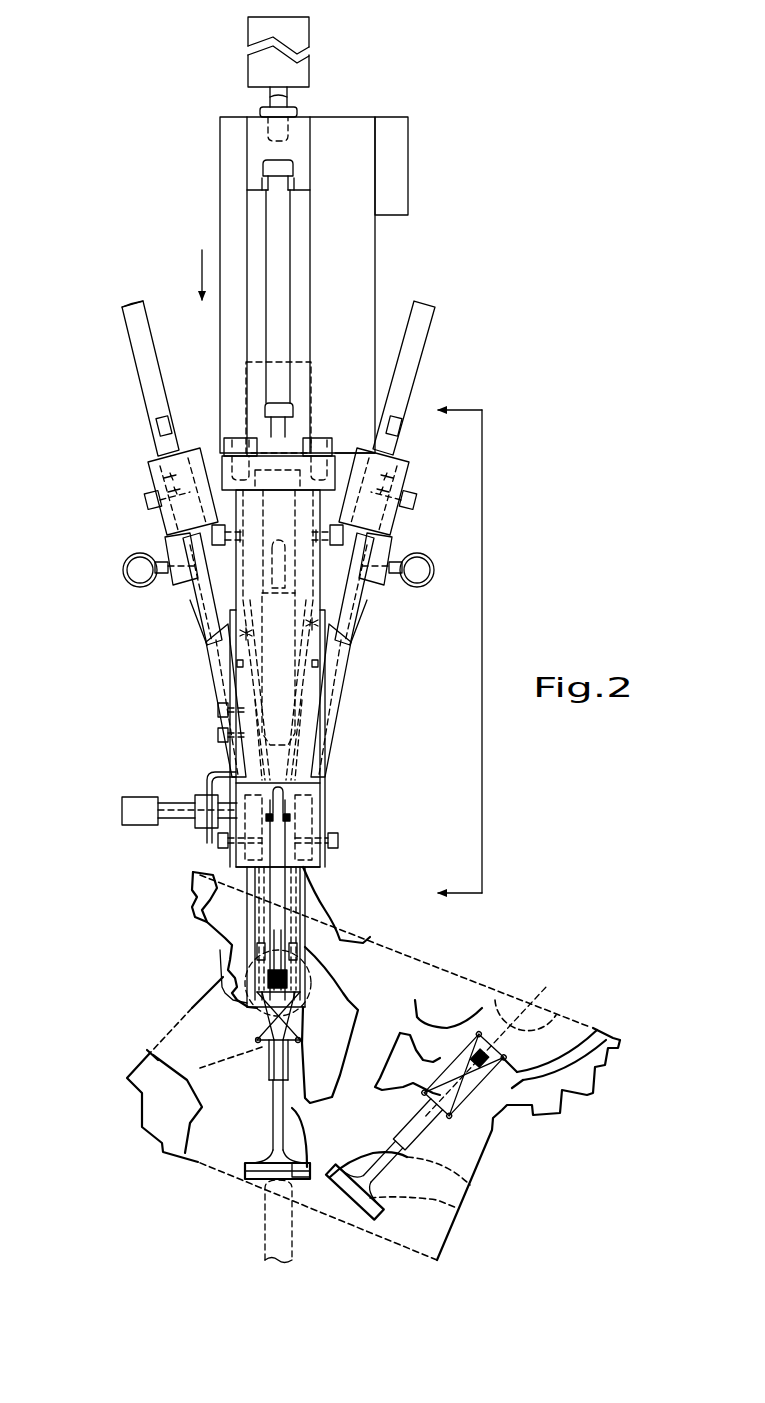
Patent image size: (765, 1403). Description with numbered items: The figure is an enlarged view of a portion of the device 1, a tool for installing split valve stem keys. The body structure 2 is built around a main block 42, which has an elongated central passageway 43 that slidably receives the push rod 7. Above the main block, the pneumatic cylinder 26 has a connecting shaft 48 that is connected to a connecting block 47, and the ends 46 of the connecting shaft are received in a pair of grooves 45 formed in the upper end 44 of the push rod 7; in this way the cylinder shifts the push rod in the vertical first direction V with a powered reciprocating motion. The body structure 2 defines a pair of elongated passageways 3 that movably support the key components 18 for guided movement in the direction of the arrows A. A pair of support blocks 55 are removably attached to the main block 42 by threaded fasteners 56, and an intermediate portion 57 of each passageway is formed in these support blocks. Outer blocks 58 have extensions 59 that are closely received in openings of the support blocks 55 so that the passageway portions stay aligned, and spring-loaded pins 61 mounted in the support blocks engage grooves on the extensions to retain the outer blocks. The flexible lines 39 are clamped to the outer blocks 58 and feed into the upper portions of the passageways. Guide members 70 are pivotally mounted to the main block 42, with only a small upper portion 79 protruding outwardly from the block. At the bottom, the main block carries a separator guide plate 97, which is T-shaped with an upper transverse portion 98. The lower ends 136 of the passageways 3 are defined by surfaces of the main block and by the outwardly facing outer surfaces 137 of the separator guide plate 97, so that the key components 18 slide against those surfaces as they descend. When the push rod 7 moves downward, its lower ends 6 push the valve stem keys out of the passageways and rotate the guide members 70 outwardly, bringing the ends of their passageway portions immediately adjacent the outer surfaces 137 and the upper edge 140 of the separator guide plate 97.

The device 1 is at (370, 658).
The body structure 2 is at (333, 735).
The elongated passageways 3 is at (210, 641).
The lower ends of push rod 6 is at (178, 708).
The push rod 7 is at (291, 285).
The key components 18 is at (164, 437).
The pneumatic cylinder 26 is at (311, 67).
The flexible lines 39 is at (139, 376).
The main block 42 is at (225, 462).
The elongated central passageway 43 is at (294, 470).
The upper end of push rod 44 is at (288, 174).
The grooves 45 is at (266, 196).
The ends of connecting shaft 46 is at (266, 190).
The connecting block 47 is at (247, 131).
The connecting shaft 48 is at (290, 101).
The support blocks 55 is at (207, 597).
The threaded fasteners 56 is at (212, 536).
The intermediate portion of elongated passageways 57 is at (210, 640).
The outer blocks 58 is at (146, 500).
The extensions 59 is at (155, 568).
The spring-loaded pins 61 is at (123, 571).
The guide members 70 is at (230, 690).
The upper portion of guide members 79 is at (210, 642).
The separator guide plate 97 is at (285, 900).
The upper transverse portion 98 is at (305, 872).
The lower ends of passageways 136 is at (263, 913).
The outer surfaces of guide plate 137 is at (264, 822).
The upper edge of separator guide plate 140 is at (281, 788).
The arrows A is at (150, 465).
The vertical first direction V is at (188, 275).